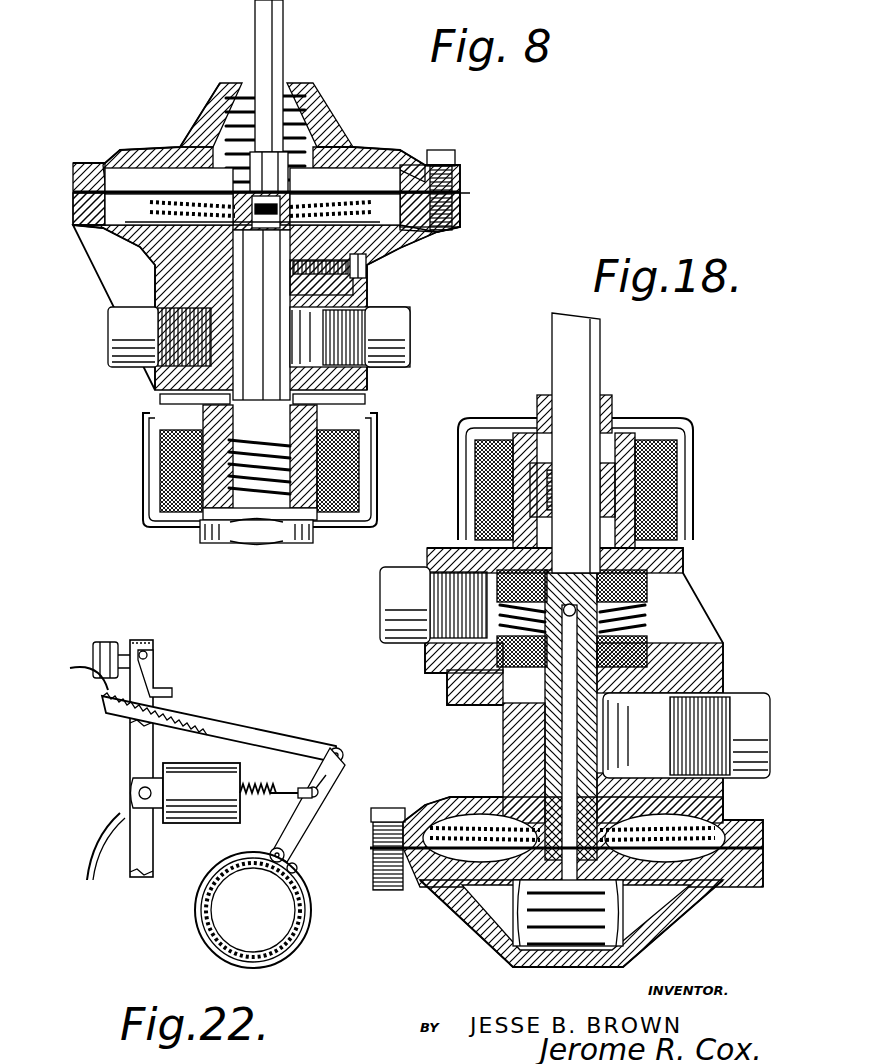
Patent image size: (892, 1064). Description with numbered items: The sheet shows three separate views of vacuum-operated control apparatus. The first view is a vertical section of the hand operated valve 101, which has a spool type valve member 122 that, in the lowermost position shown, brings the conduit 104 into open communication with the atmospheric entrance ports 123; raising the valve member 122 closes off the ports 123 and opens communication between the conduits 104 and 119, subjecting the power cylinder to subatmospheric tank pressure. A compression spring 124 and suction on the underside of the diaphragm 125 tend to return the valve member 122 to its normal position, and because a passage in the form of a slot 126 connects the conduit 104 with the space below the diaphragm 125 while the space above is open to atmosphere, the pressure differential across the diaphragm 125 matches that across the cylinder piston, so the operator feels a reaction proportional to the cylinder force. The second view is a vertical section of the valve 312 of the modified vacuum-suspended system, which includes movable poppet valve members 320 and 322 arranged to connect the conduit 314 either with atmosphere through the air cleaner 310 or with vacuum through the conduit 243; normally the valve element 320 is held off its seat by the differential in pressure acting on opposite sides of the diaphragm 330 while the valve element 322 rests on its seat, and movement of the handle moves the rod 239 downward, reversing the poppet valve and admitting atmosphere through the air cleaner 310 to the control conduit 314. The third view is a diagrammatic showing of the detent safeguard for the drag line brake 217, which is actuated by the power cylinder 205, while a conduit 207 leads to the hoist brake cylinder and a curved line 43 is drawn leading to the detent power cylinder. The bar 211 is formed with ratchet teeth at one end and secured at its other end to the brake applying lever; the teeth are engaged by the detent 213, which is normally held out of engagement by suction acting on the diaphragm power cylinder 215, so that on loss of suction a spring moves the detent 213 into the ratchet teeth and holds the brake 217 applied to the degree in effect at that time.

In FIG. 8, the hand operated valve 101 is at (188, 110).
In FIG. 8, the compression spring 124 is at (308, 128).
In FIG. 8, the diaphragm 125 is at (390, 192).
In FIG. 8, the spool type valve member 122 is at (242, 277).
In FIG. 8, the slot 126 is at (330, 290).
In FIG. 8, the conduit 119 is at (125, 322).
In FIG. 8, the conduit 104 is at (392, 332).
In FIG. 8, the atmospheric entrance ports 123 is at (158, 400).
In FIG. 18, the rod 239 is at (580, 373).
In FIG. 18, the air cleaner 310 is at (678, 472).
In FIG. 18, the poppet valve member 322 is at (640, 588).
In FIG. 18, the poppet valve member 320 is at (643, 645).
In FIG. 18, the conduit 314 is at (410, 618).
In FIG. 18, the valve 312 is at (432, 706).
In FIG. 18, the conduit 243 is at (742, 715).
In FIG. 18, the diaphragm 330 is at (445, 828).
In FIG. 22, the diaphragm power cylinder 215 is at (100, 642).
In FIG. 22, the conduit 43 is at (70, 668).
In FIG. 22, the detent 213 is at (158, 690).
In FIG. 22, the bar 211 is at (252, 733).
In FIG. 22, the conduit 207 is at (98, 836).
In FIG. 22, the power cylinder 205 is at (200, 823).
In FIG. 22, the brake 217 is at (195, 930).